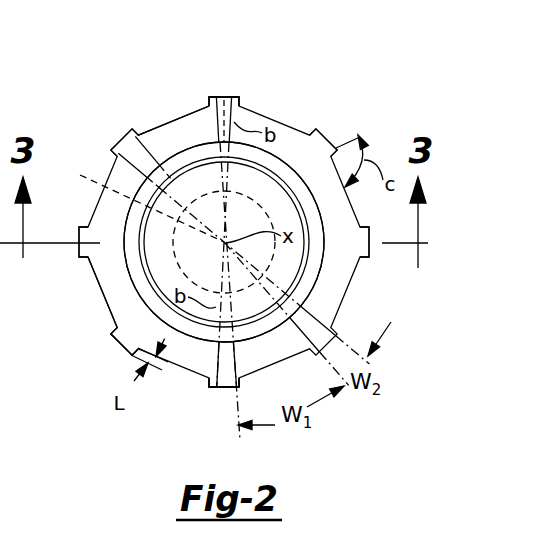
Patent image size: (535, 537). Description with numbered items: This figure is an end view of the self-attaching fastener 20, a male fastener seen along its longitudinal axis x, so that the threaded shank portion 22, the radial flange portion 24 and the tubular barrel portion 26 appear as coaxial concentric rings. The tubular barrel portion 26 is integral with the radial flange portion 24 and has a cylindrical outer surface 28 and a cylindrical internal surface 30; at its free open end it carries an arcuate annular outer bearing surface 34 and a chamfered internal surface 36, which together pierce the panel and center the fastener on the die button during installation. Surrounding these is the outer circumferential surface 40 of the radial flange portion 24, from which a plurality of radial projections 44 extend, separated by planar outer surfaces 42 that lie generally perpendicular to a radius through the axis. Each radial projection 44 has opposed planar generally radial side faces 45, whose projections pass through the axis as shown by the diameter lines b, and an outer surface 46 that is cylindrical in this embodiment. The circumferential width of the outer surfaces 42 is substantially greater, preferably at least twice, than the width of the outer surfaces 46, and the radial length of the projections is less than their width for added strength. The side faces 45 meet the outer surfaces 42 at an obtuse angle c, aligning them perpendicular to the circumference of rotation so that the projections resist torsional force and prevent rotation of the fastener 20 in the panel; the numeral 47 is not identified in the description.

The self-attaching fastener 20 is at (291, 99).
The shank portion 22 is at (141, 200).
The radial flange portion 24 is at (225, 392).
The tubular barrel portion 26 is at (125, 272).
The cylindrical outer surface 28 is at (228, 98).
The cylindrical internal surface 30 is at (296, 249).
The arcuate annular outer bearing surface 34 is at (281, 172).
The chamfered internal surface 36 is at (183, 172).
The outer circumferential surface 40 is at (197, 378).
The outer surfaces 42 is at (143, 130).
The radial projections 44 is at (327, 132).
The planar radial side faces 45 is at (110, 151).
The outer surfaces of the radial projections 46 is at (125, 351).
The tab corner 47 is at (220, 98).